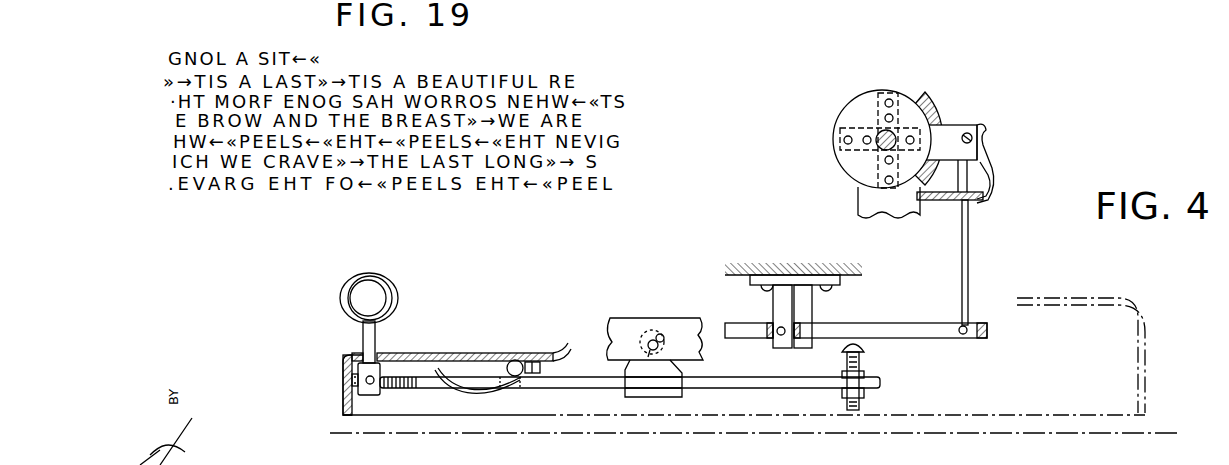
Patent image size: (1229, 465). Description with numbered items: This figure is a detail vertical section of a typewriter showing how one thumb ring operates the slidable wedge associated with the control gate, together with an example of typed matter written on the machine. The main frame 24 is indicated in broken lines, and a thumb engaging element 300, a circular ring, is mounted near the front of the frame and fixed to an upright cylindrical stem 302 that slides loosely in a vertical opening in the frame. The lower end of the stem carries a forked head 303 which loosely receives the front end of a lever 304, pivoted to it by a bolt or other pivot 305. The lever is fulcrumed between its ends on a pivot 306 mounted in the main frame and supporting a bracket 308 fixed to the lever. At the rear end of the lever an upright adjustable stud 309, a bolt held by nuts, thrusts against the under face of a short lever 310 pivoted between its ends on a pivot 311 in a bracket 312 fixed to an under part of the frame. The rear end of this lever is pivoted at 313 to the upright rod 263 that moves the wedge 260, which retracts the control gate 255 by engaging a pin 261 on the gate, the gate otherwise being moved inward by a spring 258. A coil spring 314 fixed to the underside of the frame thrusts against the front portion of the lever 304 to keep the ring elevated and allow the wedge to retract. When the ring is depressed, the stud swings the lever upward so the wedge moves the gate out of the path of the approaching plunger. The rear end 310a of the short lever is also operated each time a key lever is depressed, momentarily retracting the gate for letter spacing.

The main frame 24 is at (343, 393).
The control gate 255 is at (963, 130).
The spring 258 is at (995, 182).
The wedge 260 is at (970, 176).
The pin 261 is at (975, 134).
The upright rod 263 is at (967, 270).
The thumb engaging element 300 is at (372, 283).
The upright cylindrical stem 302 is at (364, 333).
The forked head 303 is at (360, 368).
The lever 304 is at (776, 389).
The pivot 305 is at (378, 386).
The pivot 306 is at (652, 335).
The bracket 308 is at (635, 370).
The adjustable stud 309 is at (862, 358).
The short lever 310 is at (897, 324).
The rear end of lever 310a is at (745, 327).
The pivot 311 is at (778, 336).
The bracket 312 is at (800, 303).
The pivot 313 is at (963, 338).
The coil spring 314 is at (500, 368).